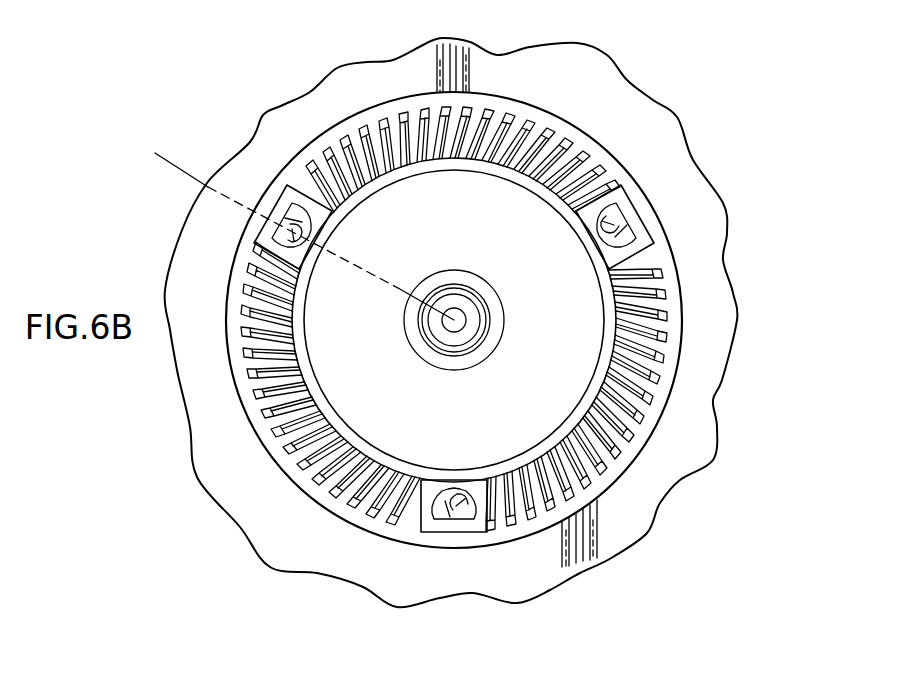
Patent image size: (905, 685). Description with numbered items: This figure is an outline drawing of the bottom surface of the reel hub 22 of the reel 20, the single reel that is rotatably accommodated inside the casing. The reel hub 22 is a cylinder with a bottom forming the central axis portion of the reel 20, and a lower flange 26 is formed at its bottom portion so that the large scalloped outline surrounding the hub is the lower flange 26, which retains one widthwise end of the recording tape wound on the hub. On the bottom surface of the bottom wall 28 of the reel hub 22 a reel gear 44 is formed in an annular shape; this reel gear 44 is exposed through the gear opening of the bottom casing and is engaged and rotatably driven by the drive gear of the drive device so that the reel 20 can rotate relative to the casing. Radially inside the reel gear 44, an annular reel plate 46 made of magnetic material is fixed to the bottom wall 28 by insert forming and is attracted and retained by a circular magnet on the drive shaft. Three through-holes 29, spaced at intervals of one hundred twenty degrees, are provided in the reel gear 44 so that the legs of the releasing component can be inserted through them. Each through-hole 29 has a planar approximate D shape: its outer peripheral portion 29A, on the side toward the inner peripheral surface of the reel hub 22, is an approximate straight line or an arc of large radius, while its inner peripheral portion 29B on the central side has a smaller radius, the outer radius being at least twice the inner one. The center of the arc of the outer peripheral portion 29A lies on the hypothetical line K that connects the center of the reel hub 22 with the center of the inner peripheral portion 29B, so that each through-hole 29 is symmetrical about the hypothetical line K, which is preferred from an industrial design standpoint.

The reel 20 is at (641, 84).
The reel hub 22 is at (507, 88).
The lower flange 26 is at (578, 68).
The bottom wall 28 is at (475, 327).
The through-hole 29 is at (306, 192).
The outer peripheral portion 29A is at (295, 243).
The inner peripheral portion 29B is at (320, 231).
The reel gear 44 is at (655, 281).
The reel plate 46 is at (333, 333).
The hypothetical line K is at (178, 158).